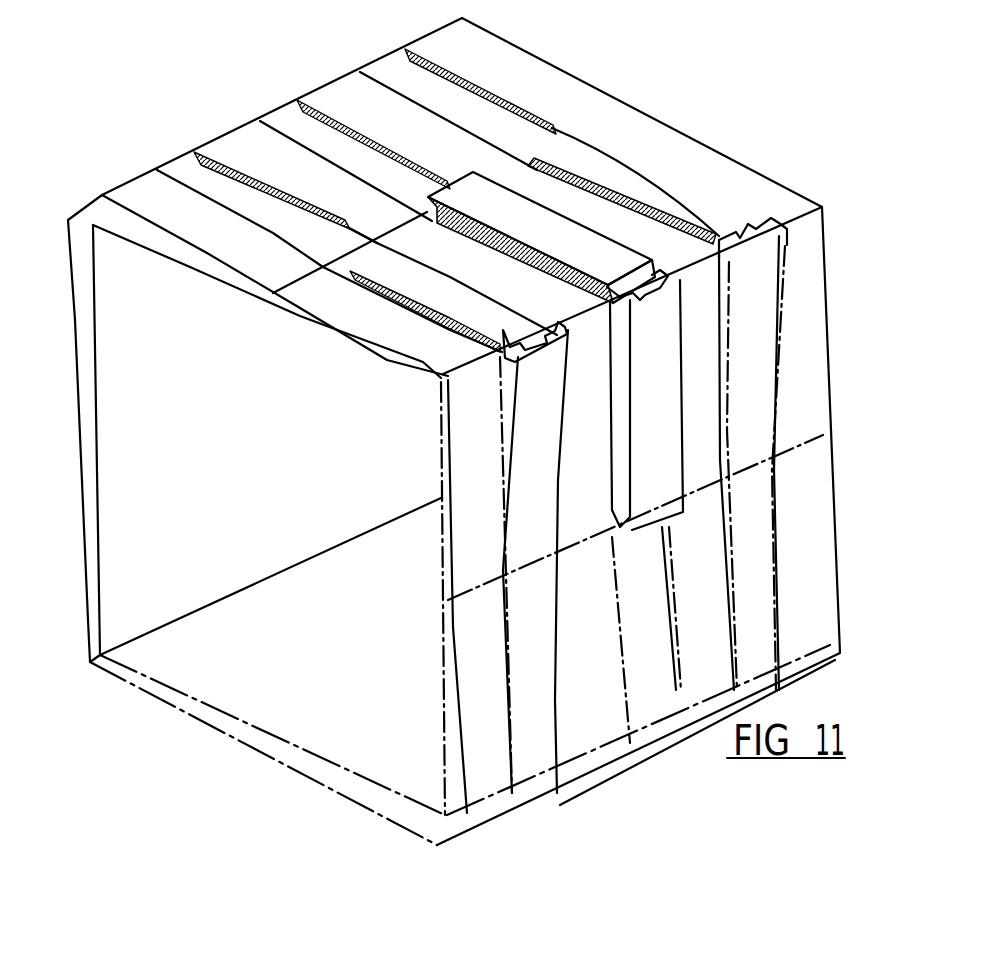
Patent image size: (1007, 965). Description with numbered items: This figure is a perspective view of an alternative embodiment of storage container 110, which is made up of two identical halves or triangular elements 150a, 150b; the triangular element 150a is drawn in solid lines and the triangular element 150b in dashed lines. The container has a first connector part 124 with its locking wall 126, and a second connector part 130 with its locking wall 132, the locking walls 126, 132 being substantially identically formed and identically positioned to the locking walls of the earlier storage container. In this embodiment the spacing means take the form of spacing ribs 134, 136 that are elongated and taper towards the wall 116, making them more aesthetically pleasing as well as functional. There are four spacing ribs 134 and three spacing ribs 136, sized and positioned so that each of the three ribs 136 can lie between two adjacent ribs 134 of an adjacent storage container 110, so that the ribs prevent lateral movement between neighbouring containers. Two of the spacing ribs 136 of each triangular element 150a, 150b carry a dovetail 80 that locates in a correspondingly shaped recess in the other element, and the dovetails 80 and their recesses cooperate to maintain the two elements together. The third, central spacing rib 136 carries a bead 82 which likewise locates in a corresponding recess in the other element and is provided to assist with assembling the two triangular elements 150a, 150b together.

The storage container 110 is at (790, 93).
The wall 116 is at (262, 297).
The first connector part 124 is at (480, 197).
The locking wall 126 is at (377, 243).
The second connector part 130 is at (650, 482).
The locking wall 132 is at (610, 535).
The spacing ribs 134 is at (443, 37).
The spacing ribs 136 is at (547, 383).
The triangular element 150a is at (337, 462).
The triangular element 150b is at (360, 677).
The dovetail 80 is at (533, 322).
The bead 82 is at (642, 278).